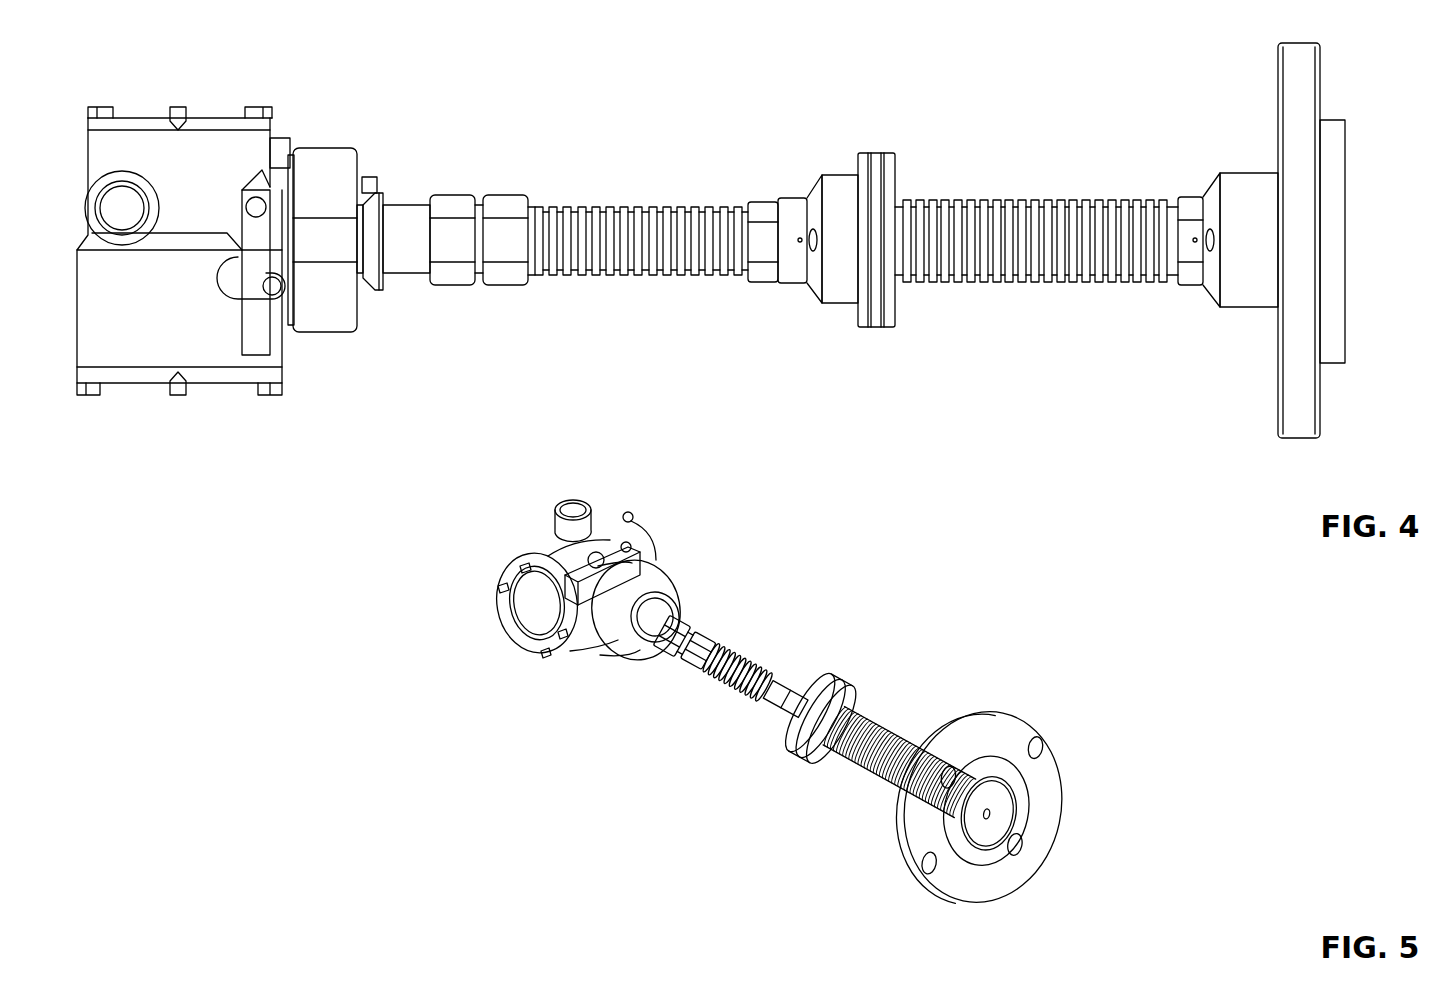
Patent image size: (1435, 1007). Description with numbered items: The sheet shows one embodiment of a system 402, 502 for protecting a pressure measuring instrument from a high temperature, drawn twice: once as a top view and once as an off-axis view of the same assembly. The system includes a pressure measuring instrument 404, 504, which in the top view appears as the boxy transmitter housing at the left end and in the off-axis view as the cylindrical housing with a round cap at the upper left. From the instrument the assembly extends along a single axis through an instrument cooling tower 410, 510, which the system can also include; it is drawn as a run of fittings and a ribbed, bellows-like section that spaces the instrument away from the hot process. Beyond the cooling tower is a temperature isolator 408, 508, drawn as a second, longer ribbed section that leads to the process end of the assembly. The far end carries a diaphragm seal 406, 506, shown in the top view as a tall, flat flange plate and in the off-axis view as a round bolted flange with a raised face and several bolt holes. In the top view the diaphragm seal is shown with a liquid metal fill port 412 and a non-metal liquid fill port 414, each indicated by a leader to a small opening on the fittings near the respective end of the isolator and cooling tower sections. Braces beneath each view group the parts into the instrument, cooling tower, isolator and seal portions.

In FIG. 4, the system 402 is at (161, 80).
In FIG. 4, the pressure measuring instrument 404 is at (480, 428).
In FIG. 4, the diaphragm seal 406 is at (1345, 428).
In FIG. 4, the temperature isolator 408 is at (1202, 428).
In FIG. 4, the instrument cooling tower 410 is at (785, 428).
In FIG. 4, the liquid metal fill port 412 is at (1212, 226).
In FIG. 4, the non-metal liquid fill port 414 is at (807, 222).
In FIG. 5, the system 502 is at (407, 530).
In FIG. 5, the pressure measuring instrument 504 is at (495, 693).
In FIG. 5, the diaphragm seal 506 is at (900, 907).
In FIG. 5, the temperature isolator 508 is at (778, 887).
In FIG. 5, the instrument cooling tower 510 is at (668, 713).